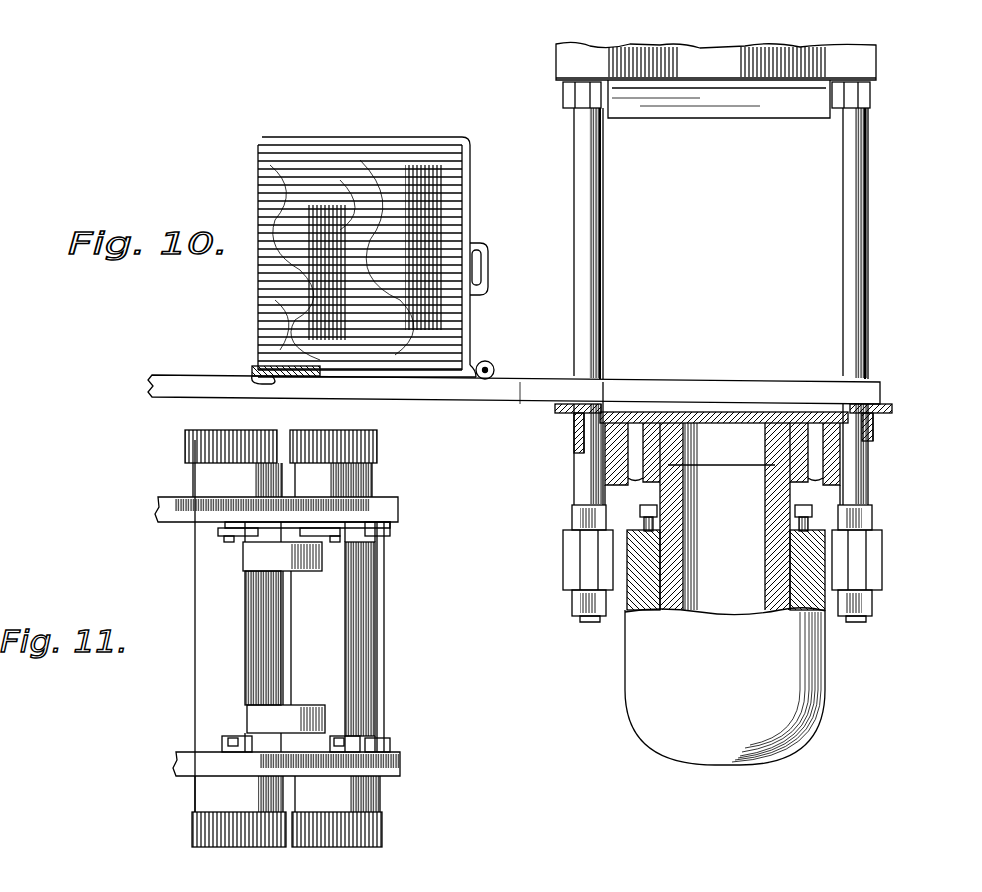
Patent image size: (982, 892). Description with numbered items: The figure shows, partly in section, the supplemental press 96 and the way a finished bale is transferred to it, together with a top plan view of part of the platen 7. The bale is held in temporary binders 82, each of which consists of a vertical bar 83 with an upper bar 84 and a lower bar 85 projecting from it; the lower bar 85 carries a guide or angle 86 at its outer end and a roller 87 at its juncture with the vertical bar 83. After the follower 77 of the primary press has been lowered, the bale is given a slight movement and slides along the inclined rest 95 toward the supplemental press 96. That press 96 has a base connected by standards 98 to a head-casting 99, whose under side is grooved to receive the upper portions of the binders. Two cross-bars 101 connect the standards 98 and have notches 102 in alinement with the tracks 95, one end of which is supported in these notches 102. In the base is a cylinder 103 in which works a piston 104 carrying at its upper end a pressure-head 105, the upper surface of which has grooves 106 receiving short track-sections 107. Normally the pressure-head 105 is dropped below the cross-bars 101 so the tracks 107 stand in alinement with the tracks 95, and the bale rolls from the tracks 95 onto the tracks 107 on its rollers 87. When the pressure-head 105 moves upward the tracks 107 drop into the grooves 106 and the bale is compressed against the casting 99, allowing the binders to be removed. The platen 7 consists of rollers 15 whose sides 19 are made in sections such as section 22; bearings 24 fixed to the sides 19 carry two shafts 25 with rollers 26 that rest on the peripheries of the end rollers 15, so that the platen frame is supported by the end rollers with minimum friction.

In FIG. 11, the platen 7 is at (177, 626).
In FIG. 11, the rollers 15 is at (290, 637).
In FIG. 11, the sides 19 is at (160, 512).
In FIG. 11, the section 22 is at (392, 511).
In FIG. 11, the bearings 24 is at (380, 545).
In FIG. 11, the shafts 25 is at (292, 600).
In FIG. 11, the rollers 26 is at (284, 637).
In FIG. 10, the follower 77 is at (514, 400).
In FIG. 11, the follower 77 is at (287, 811).
In FIG. 10, the binders 82 is at (379, 340).
In FIG. 10, the vertical bar 83 is at (466, 222).
In FIG. 10, the upper bar 84 is at (388, 143).
In FIG. 10, the lower bar 85 is at (412, 372).
In FIG. 10, the guide or angle 86 is at (252, 370).
In FIG. 10, the roller 87 is at (487, 362).
In FIG. 10, the inclined rest 95 is at (520, 400).
In FIG. 10, the supplemental press 96 is at (716, 175).
In FIG. 10, the standards 98 is at (604, 310).
In FIG. 10, the head-casting 99 is at (686, 112).
In FIG. 10, the cross-bars 101 is at (578, 440).
In FIG. 10, the notches 102 is at (560, 413).
In FIG. 10, the cylinder 103 is at (725, 668).
In FIG. 10, the piston 104 is at (721, 516).
In FIG. 10, the pressure-head 105 is at (737, 400).
In FIG. 10, the grooves 106 is at (640, 410).
In FIG. 10, the track-sections 107 is at (604, 388).